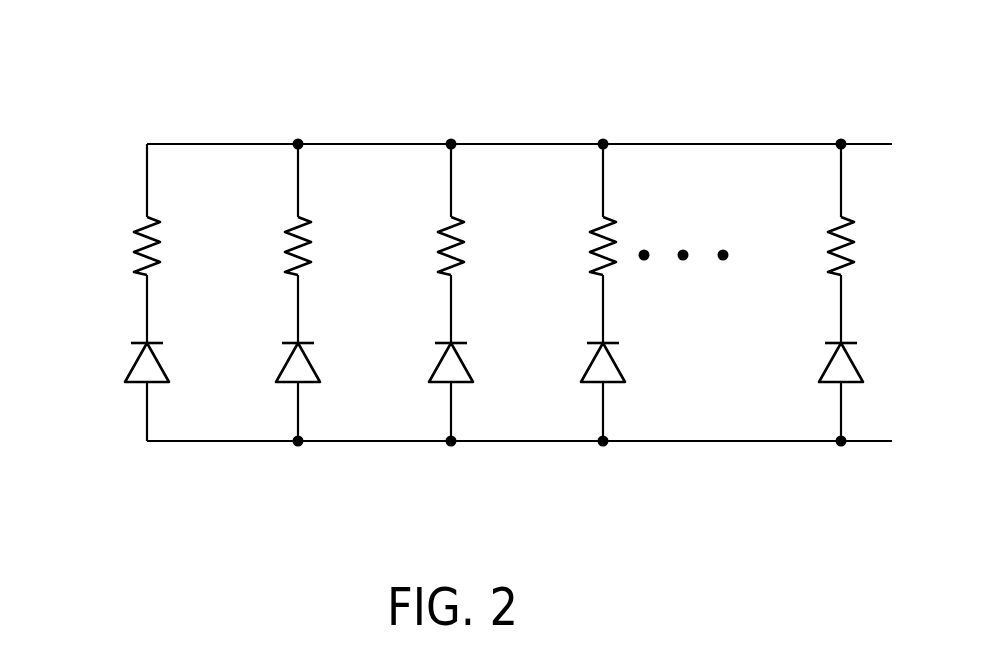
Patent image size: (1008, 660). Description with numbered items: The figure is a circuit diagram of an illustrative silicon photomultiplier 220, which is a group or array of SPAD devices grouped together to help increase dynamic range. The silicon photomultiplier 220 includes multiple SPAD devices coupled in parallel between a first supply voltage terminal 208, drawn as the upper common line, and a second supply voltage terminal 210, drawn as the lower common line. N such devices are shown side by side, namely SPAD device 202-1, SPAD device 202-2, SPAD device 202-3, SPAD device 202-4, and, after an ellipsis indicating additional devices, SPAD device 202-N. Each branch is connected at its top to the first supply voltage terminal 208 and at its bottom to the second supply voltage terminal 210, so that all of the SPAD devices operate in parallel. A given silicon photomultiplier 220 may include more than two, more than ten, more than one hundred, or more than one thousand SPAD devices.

The silicon photomultiplier 220 is at (125, 122).
The first supply voltage terminal 208 is at (862, 144).
The second supply voltage terminal 210 is at (867, 441).
The SPAD device 202-1 is at (110, 240).
The SPAD device 202-2 is at (260, 250).
The SPAD device 202-3 is at (413, 250).
The SPAD device 202-4 is at (565, 250).
The SPAD device 202-N is at (802, 250).